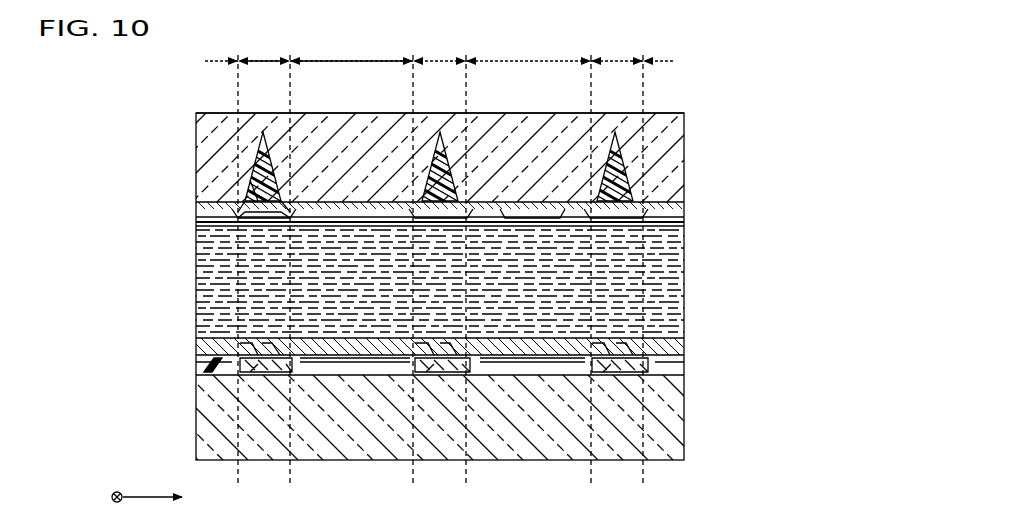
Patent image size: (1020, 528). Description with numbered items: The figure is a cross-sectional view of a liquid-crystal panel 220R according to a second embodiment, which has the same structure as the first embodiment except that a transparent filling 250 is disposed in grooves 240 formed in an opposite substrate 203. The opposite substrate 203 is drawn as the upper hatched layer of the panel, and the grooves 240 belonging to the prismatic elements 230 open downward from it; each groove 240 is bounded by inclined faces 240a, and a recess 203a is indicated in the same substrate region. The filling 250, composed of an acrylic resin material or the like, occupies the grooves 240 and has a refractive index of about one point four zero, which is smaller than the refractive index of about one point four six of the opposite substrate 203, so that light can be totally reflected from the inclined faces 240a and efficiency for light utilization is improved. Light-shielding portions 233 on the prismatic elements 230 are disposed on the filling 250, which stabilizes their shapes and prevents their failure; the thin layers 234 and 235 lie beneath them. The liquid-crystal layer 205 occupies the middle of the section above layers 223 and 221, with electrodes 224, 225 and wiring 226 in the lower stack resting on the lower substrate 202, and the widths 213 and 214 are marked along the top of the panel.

The substrate 202 is at (660, 422).
The opposite substrate 203 is at (665, 142).
The recess of counter substrate 203a is at (518, 212).
The liquid crystal layer 205 is at (206, 292).
The pixel region width 213 is at (350, 58).
The spacer region width 214 is at (262, 58).
The liquid-crystal panel 220R is at (707, 76).
The insulating layer 221 is at (672, 366).
The planarization layer 223 is at (650, 350).
The common electrode 224 is at (324, 372).
The pixel electrode 225 is at (207, 345).
The wiring 226 is at (207, 366).
The prismatic element 230 is at (246, 151).
The light-shielding portion 233 is at (655, 207).
The overcoat layer 234 is at (660, 214).
The alignment film 235 is at (665, 222).
The groove 240 is at (240, 160).
The inclined face 240a is at (283, 160).
The transparent filling 250 is at (245, 152).